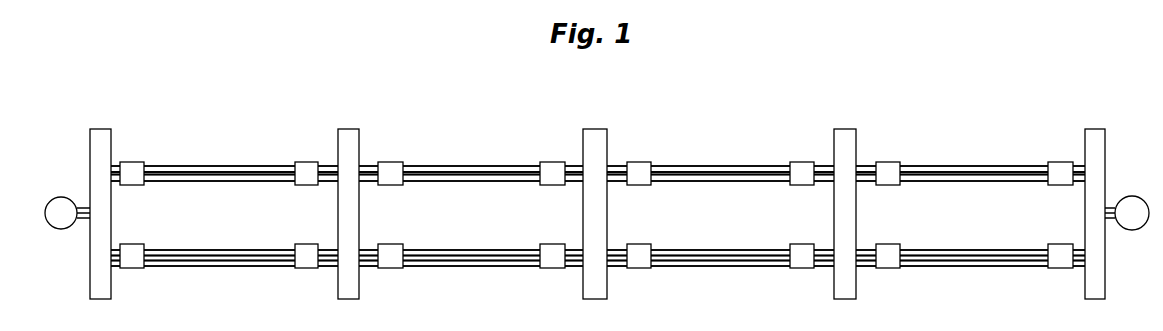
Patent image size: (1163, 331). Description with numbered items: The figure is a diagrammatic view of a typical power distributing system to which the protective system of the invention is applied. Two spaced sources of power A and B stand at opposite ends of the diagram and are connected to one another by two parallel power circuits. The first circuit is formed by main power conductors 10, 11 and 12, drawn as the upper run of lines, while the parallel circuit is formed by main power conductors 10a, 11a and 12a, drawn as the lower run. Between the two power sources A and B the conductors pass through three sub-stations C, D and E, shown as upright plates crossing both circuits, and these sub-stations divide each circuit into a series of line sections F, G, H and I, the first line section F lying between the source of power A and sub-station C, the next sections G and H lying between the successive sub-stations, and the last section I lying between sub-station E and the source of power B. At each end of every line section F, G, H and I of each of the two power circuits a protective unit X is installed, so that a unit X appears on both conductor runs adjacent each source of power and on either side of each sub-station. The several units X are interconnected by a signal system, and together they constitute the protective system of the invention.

The source of power A is at (62, 224).
The source of power B is at (1135, 224).
The sub-station C is at (352, 134).
The sub-station D is at (596, 138).
The sub-station E is at (847, 134).
The line section F is at (263, 183).
The line section G is at (512, 183).
The line section H is at (747, 183).
The line section I is at (998, 183).
The protective unit X is at (596, 214).
The main power conductor 10 is at (201, 165).
The main power conductor 11 is at (231, 171).
The main power conductor 12 is at (251, 179).
The main power conductor 10a is at (202, 252).
The main power conductor 11a is at (232, 258).
The main power conductor 12a is at (264, 264).